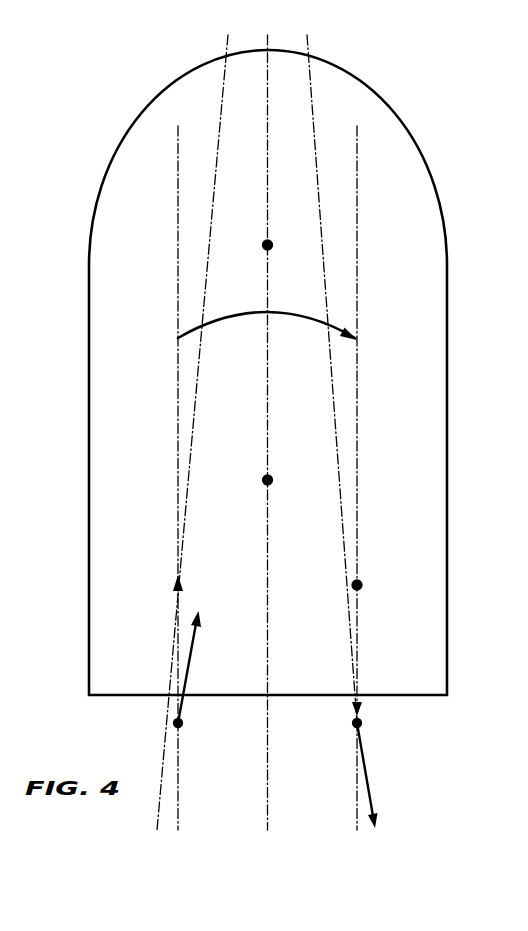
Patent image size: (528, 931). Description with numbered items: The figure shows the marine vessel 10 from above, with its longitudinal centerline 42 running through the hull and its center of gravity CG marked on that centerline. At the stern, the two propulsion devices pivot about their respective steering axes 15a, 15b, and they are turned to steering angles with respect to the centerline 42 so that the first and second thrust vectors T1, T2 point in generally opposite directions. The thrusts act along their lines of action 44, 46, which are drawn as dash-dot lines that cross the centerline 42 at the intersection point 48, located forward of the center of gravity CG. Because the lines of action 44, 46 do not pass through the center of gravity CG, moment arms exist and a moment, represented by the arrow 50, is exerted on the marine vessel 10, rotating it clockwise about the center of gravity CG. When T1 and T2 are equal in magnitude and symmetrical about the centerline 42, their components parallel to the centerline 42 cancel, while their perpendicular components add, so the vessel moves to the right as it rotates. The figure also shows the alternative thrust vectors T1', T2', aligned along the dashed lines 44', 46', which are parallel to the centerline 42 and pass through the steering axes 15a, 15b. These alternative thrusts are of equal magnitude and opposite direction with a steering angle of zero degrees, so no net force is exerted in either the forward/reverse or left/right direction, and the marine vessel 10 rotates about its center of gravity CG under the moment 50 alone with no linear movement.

The marine vessel 10 is at (417, 149).
The centerline 42 is at (265, 108).
The line of action 44 is at (328, 379).
The line of action 46 is at (196, 432).
The dashed line 44' is at (158, 478).
The dashed line 46' is at (383, 478).
The intersection point 48 is at (270, 244).
The moment arrow 50 is at (318, 315).
The center of gravity CG is at (269, 482).
The first thrust vector T1 is at (206, 667).
The alternative first thrust vector T1' is at (152, 617).
The second thrust vector T2 is at (386, 775).
The alternative second thrust vector T2' is at (384, 648).
The steering axis 15a is at (176, 723).
The steering axis 15b is at (360, 721).